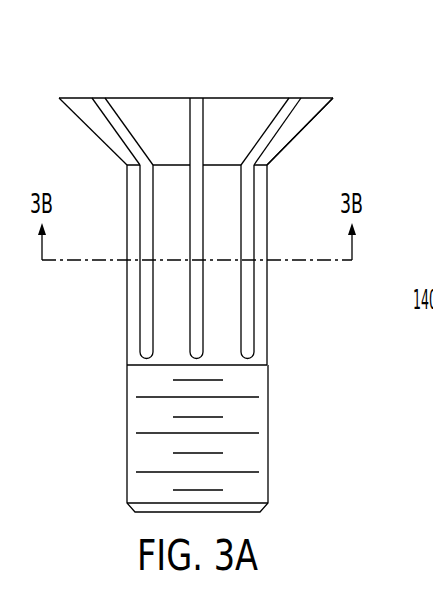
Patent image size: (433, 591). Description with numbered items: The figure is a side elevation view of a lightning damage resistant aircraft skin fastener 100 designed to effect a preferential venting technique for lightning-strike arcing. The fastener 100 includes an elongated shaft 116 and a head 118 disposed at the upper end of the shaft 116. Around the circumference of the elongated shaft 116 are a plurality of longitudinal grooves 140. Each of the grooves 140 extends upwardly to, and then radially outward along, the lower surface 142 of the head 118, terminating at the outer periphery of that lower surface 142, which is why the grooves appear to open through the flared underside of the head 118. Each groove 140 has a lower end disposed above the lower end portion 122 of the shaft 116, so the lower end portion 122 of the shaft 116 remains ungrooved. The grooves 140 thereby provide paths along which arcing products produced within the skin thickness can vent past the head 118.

The lightning damage resistant aircraft skin fastener 100 is at (200, 260).
The lower surface of the head 142 is at (242, 105).
The head 118 is at (317, 105).
The elongated shaft 116 is at (168, 325).
The longitudinal grooves 140 is at (197, 348).
The lower end portion of the shaft 122 is at (252, 420).